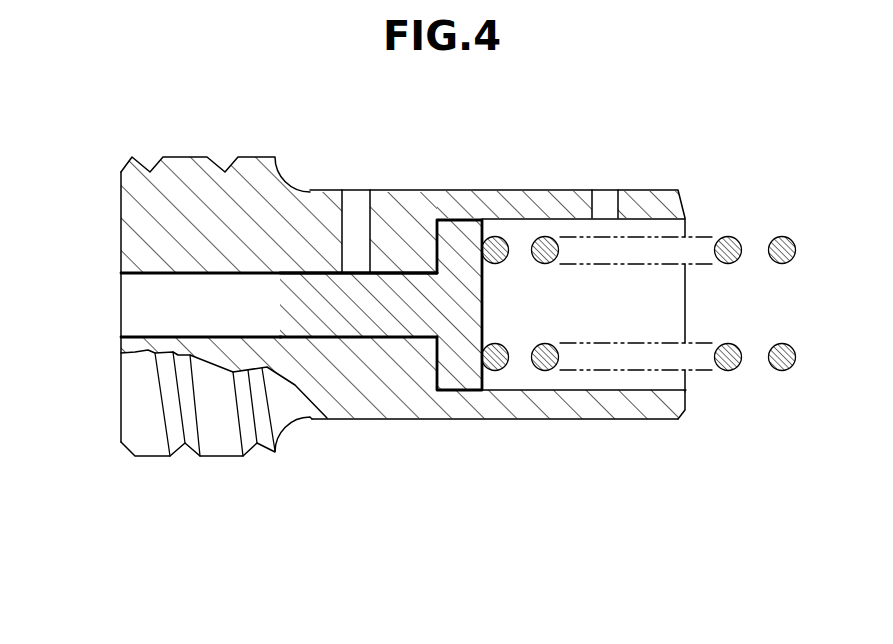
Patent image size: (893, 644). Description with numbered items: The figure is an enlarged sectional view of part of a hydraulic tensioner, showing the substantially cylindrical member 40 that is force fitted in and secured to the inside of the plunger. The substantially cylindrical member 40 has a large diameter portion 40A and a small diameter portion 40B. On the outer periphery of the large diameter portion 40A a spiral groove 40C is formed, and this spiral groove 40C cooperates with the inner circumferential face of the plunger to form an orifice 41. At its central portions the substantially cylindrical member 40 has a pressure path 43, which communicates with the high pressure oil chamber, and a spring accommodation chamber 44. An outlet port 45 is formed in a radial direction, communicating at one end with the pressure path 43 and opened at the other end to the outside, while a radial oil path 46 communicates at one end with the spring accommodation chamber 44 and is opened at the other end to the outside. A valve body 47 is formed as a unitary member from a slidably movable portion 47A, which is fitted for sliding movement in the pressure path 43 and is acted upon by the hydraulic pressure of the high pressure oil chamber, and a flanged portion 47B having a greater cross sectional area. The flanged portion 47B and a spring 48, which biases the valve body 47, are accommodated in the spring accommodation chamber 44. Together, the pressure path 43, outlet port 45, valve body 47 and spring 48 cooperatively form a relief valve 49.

The substantially cylindrical member 40 is at (371, 308).
The large diameter portion 40A is at (182, 157).
The small diameter portion 40B is at (475, 190).
The spiral groove 40C is at (403, 440).
The orifice 41 is at (185, 452).
The pressure path 43 is at (142, 304).
The spring accommodation chamber 44 is at (625, 390).
The outlet port 45 is at (357, 207).
The oil path 46 is at (605, 200).
The valve body 47 is at (431, 352).
The slidably movable portion 47A is at (365, 325).
The flanged portion 47B is at (486, 302).
The spring 48 is at (732, 237).
The relief valve 49 is at (517, 186).